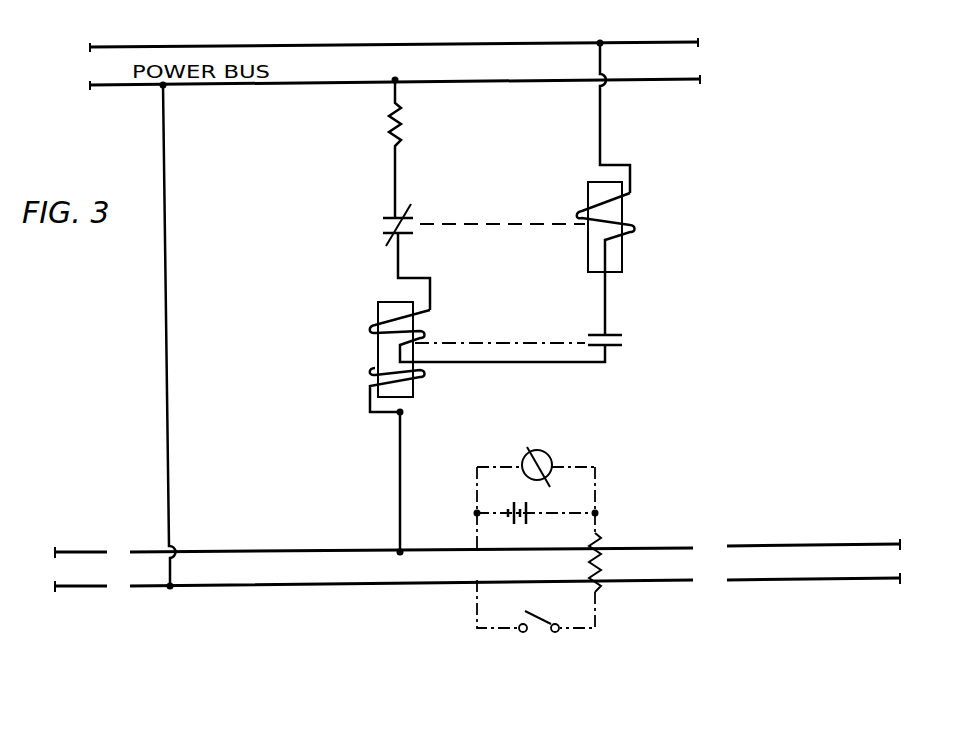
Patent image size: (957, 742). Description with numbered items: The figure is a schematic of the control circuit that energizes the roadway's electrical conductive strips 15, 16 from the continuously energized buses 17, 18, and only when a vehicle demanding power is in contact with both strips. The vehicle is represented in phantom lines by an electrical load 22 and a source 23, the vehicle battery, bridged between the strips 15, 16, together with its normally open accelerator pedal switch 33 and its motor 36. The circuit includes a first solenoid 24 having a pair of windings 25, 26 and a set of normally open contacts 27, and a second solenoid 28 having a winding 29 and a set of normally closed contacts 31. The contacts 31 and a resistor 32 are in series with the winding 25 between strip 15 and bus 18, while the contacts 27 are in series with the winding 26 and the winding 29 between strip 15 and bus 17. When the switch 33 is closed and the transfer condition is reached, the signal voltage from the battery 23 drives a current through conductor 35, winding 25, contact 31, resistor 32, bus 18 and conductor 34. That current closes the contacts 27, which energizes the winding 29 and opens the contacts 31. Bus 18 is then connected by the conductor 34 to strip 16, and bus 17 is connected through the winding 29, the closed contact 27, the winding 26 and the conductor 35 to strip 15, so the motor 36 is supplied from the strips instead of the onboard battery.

The electrical conductive strip 15 is at (246, 552).
The electrical conductive strip 16 is at (330, 584).
The bus 17 is at (490, 43).
The bus 18 is at (511, 82).
The electrical load 22 is at (603, 553).
The source 23 is at (540, 506).
The first solenoid 24 is at (357, 333).
The winding 25 is at (424, 331).
The winding 26 is at (420, 376).
The normally open contacts 27 is at (613, 335).
The second solenoid 28 is at (586, 187).
The winding 29 is at (634, 196).
The normally closed contacts 31 is at (409, 222).
The resistor 32 is at (391, 133).
The accelerator pedal switch 33 is at (530, 639).
The conductor 34 is at (166, 216).
The conductor 35 is at (399, 447).
The motor 36 is at (546, 452).